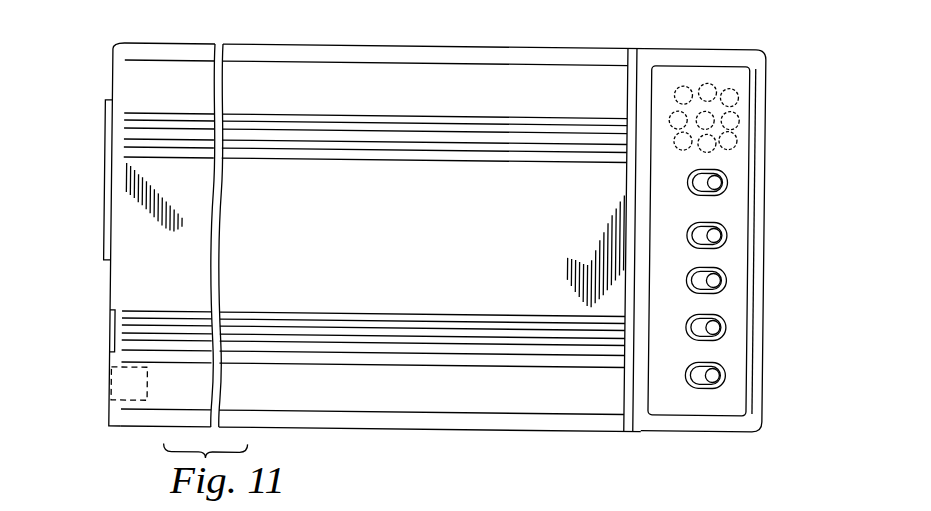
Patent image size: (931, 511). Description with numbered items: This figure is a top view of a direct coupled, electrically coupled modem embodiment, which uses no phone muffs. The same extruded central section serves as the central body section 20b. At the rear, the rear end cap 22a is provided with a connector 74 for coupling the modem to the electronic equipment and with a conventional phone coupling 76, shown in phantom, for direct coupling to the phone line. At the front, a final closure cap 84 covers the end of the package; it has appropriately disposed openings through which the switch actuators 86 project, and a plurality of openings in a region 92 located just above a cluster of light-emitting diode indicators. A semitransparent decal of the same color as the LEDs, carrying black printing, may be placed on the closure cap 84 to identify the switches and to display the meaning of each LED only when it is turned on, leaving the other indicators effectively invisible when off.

The central body section 20b is at (292, 48).
The rear end cap 22a is at (118, 54).
The connector 74 is at (107, 135).
The phone coupling 76 is at (142, 378).
The closure cap 84 is at (719, 45).
The region 92 is at (727, 73).
The switch actuators 86 is at (722, 167).